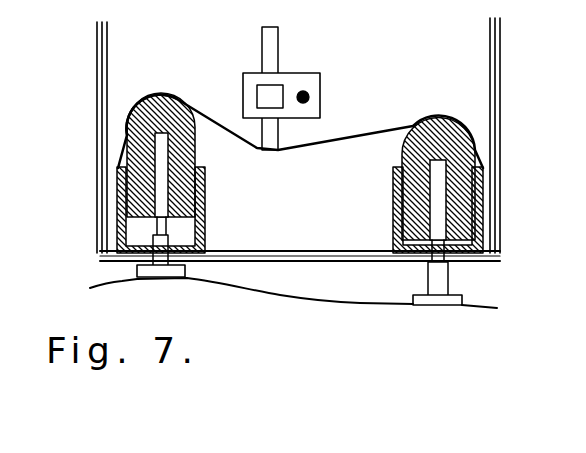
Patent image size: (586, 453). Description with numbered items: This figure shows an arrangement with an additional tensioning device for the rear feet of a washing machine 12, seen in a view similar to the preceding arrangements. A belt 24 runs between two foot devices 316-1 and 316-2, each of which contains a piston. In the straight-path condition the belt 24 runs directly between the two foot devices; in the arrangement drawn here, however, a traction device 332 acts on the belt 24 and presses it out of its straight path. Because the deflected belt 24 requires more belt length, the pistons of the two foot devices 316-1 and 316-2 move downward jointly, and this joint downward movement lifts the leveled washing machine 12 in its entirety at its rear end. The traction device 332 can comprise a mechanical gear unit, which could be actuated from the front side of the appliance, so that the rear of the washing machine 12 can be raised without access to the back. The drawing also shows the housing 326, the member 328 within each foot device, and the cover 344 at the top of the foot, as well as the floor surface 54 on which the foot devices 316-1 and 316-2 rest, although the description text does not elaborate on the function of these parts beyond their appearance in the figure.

The washing machine 12 is at (503, 85).
The belt 24 is at (358, 130).
The floor surface 54 is at (487, 307).
The foot device 316-1 is at (165, 278).
The foot device 316-2 is at (437, 307).
The housing cup 326 is at (205, 208).
The resilient dome member 328 is at (146, 92).
The traction device 332 is at (297, 73).
The cover 344 is at (162, 92).